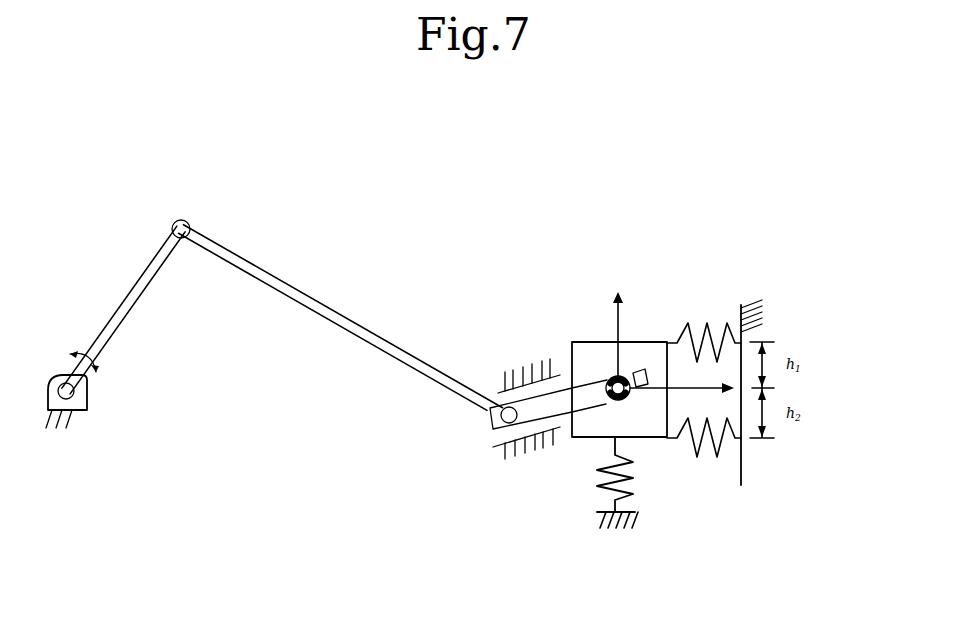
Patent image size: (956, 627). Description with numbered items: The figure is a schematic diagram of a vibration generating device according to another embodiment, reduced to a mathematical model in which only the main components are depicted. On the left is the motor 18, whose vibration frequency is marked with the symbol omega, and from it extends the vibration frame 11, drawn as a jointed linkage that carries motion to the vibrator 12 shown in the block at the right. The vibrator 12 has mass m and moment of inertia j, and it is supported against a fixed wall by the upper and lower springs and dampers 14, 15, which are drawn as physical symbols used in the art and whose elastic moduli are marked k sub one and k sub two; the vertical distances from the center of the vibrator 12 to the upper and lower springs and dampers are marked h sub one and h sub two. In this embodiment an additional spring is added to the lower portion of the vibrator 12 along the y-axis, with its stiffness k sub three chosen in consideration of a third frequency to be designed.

The vibration frame 11 is at (320, 313).
The vibrator 12 is at (613, 403).
The spring and damper 14 is at (712, 330).
The spring and damper 15 is at (633, 492).
The motor 18 is at (78, 402).